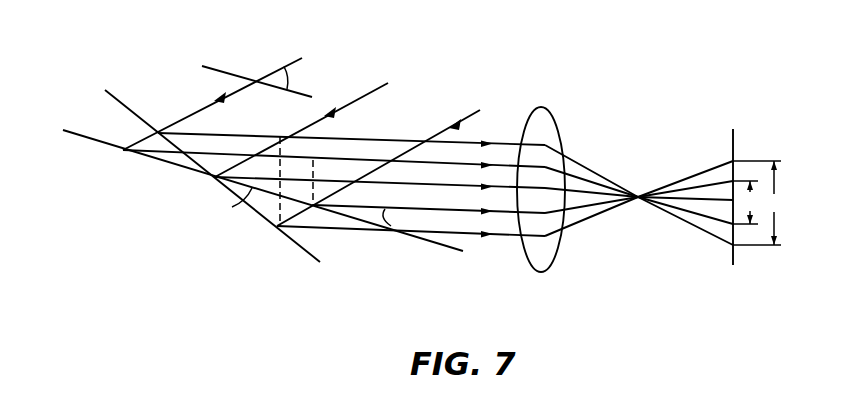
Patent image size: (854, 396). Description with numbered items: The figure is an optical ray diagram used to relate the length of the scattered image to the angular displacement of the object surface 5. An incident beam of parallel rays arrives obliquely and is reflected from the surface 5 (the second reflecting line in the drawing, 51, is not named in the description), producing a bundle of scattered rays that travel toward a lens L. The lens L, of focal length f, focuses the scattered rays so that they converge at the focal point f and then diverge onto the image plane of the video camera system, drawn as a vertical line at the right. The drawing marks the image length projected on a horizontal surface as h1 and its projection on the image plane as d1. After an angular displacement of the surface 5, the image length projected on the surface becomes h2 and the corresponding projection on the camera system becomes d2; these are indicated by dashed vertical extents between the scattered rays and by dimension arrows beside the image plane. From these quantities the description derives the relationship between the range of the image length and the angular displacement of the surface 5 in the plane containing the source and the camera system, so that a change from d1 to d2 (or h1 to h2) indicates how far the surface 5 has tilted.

The object surface 5 is at (447, 245).
The first partially reflecting mirror 51 is at (318, 257).
The lens L is at (540, 272).
The focal length f is at (652, 182).
The incident angle of light beam a is at (257, 81).
The image length projected on horizontal surface h1 is at (326, 182).
The image length projected on surface after displacement h2 is at (291, 181).
The projection on image plane d1 is at (747, 202).
The projection on camera system after displacement d2 is at (759, 203).